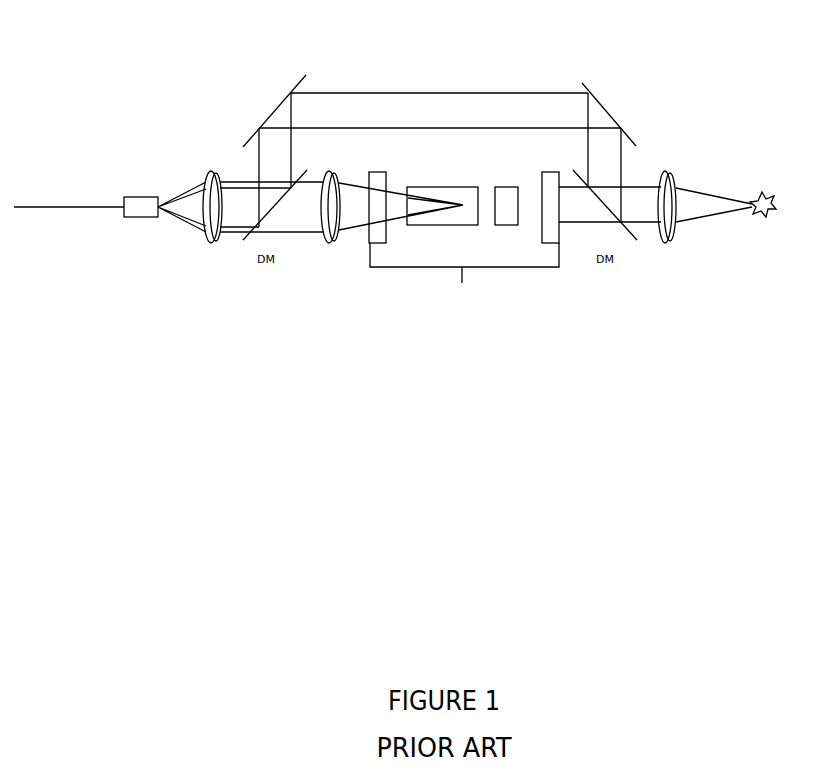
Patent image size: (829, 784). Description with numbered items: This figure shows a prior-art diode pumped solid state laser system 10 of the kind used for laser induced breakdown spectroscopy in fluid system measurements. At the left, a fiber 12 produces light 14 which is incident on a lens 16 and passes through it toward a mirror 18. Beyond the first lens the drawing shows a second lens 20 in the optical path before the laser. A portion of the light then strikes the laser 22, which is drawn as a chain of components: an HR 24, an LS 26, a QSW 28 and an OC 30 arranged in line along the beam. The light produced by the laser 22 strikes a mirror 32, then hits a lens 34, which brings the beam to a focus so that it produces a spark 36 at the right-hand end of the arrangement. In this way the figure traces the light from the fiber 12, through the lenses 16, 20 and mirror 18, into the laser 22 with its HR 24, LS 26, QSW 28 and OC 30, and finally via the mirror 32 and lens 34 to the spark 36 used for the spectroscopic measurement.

The diode pumped solid state laser system 10 is at (556, 71).
The fiber 12 is at (70, 207).
The light 14 is at (183, 192).
The lens 16 is at (207, 236).
The mirror 18 is at (262, 122).
The focusing lens 20 is at (331, 243).
The laser 22 is at (458, 313).
The HR 24 is at (369, 175).
The LS 26 is at (425, 187).
The QSW 28 is at (505, 187).
The OC 30 is at (553, 243).
The mirror 32 is at (616, 120).
The lens 34 is at (671, 237).
The spark 36 is at (767, 218).